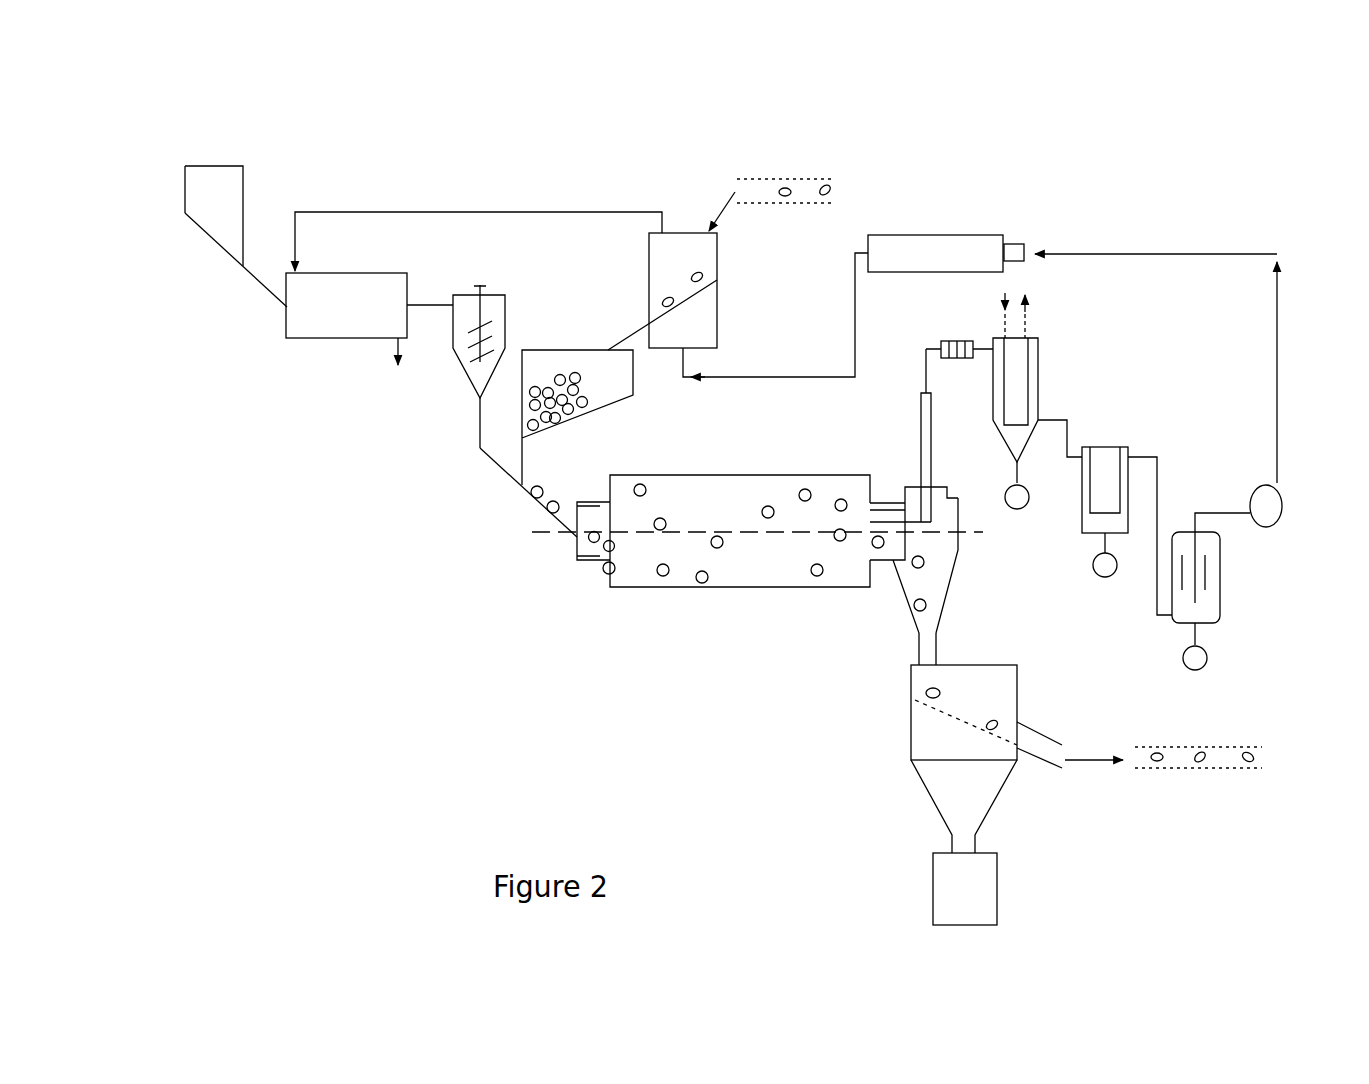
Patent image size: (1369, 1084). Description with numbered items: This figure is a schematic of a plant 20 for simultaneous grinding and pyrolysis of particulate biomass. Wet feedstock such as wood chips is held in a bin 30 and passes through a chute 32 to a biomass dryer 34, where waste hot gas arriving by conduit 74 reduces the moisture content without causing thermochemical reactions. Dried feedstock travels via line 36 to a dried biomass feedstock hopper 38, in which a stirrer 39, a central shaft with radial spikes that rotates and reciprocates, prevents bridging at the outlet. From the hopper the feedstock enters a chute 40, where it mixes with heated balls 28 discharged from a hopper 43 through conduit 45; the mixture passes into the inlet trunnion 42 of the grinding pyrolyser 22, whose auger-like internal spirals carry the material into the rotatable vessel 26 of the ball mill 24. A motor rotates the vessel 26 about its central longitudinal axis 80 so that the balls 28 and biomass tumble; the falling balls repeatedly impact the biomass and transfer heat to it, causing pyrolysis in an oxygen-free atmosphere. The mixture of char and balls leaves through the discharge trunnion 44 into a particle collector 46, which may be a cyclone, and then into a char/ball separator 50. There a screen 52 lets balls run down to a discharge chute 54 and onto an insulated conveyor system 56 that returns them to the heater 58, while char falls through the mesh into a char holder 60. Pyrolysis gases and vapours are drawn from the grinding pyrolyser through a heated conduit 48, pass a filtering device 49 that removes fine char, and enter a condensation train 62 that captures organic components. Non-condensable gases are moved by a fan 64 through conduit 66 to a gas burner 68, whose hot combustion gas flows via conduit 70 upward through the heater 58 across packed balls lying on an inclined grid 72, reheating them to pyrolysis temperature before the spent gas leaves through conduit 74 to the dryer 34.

The plant 20 is at (138, 145).
The grinding pyrolyser 22 is at (638, 607).
The ball mill 24 is at (745, 475).
The rotatable vessel or drum 26 is at (608, 582).
The balls 28 is at (697, 272).
The bin (hopper) 30 is at (205, 197).
The chute 32 is at (255, 280).
The biomass dryer 34 is at (300, 323).
The line 36 is at (433, 307).
The dried biomass feedstock hopper 38 is at (495, 318).
The stirrer 39 is at (467, 363).
The chute 40 is at (502, 477).
The inlet trunnion 42 is at (577, 545).
The hopper 43 is at (607, 408).
The discharge trunnion 44 is at (893, 566).
The conduit 45 is at (525, 457).
The particle collector 46 is at (958, 543).
The conduit 48 is at (921, 435).
The filtering device 49 is at (957, 358).
The char/ball separator 50 is at (1017, 683).
The screen (mesh) 52 is at (950, 718).
The discharge chute 54 is at (1048, 732).
The conveyor system 56 is at (1190, 768).
The heater 58 is at (717, 248).
The char holder 60 is at (942, 885).
The condensation train 62 is at (1198, 498).
The fan 64 is at (1277, 485).
The conduit 66 is at (1277, 313).
The gas burner 68 is at (978, 247).
The conduit 70 is at (855, 308).
The inclined grid 72 is at (683, 303).
The conduit 74 is at (492, 212).
The central longitudinal axis 80 is at (536, 533).